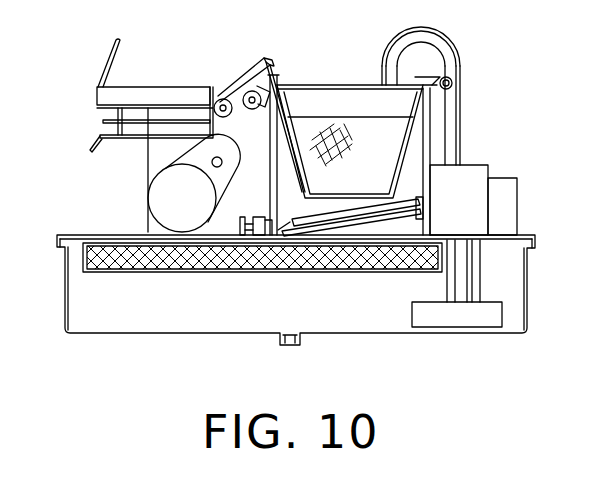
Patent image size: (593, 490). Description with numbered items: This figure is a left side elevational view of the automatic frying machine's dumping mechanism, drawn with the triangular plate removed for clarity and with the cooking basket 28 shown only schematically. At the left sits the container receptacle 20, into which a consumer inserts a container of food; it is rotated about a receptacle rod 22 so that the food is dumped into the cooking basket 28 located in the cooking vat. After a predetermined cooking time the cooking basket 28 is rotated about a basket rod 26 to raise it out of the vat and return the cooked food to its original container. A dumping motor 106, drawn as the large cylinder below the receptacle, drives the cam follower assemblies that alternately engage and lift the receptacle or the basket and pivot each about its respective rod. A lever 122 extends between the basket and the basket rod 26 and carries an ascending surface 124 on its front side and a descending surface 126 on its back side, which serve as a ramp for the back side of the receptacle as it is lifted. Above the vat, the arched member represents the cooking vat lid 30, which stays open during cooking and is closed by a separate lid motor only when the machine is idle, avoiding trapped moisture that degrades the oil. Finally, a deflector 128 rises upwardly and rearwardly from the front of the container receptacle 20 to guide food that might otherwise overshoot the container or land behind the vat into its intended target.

The container receptacle 20 is at (90, 150).
The receptacle rod 22 is at (247, 93).
The basket rod 26 is at (220, 99).
The cooking basket 28 is at (413, 134).
The cooking vat lid 30 is at (358, 77).
The dumping motor 106 is at (158, 198).
The lever 122 is at (268, 63).
The ascending surface 124 is at (252, 72).
The descending surface 126 is at (275, 72).
The deflector 128 is at (108, 58).